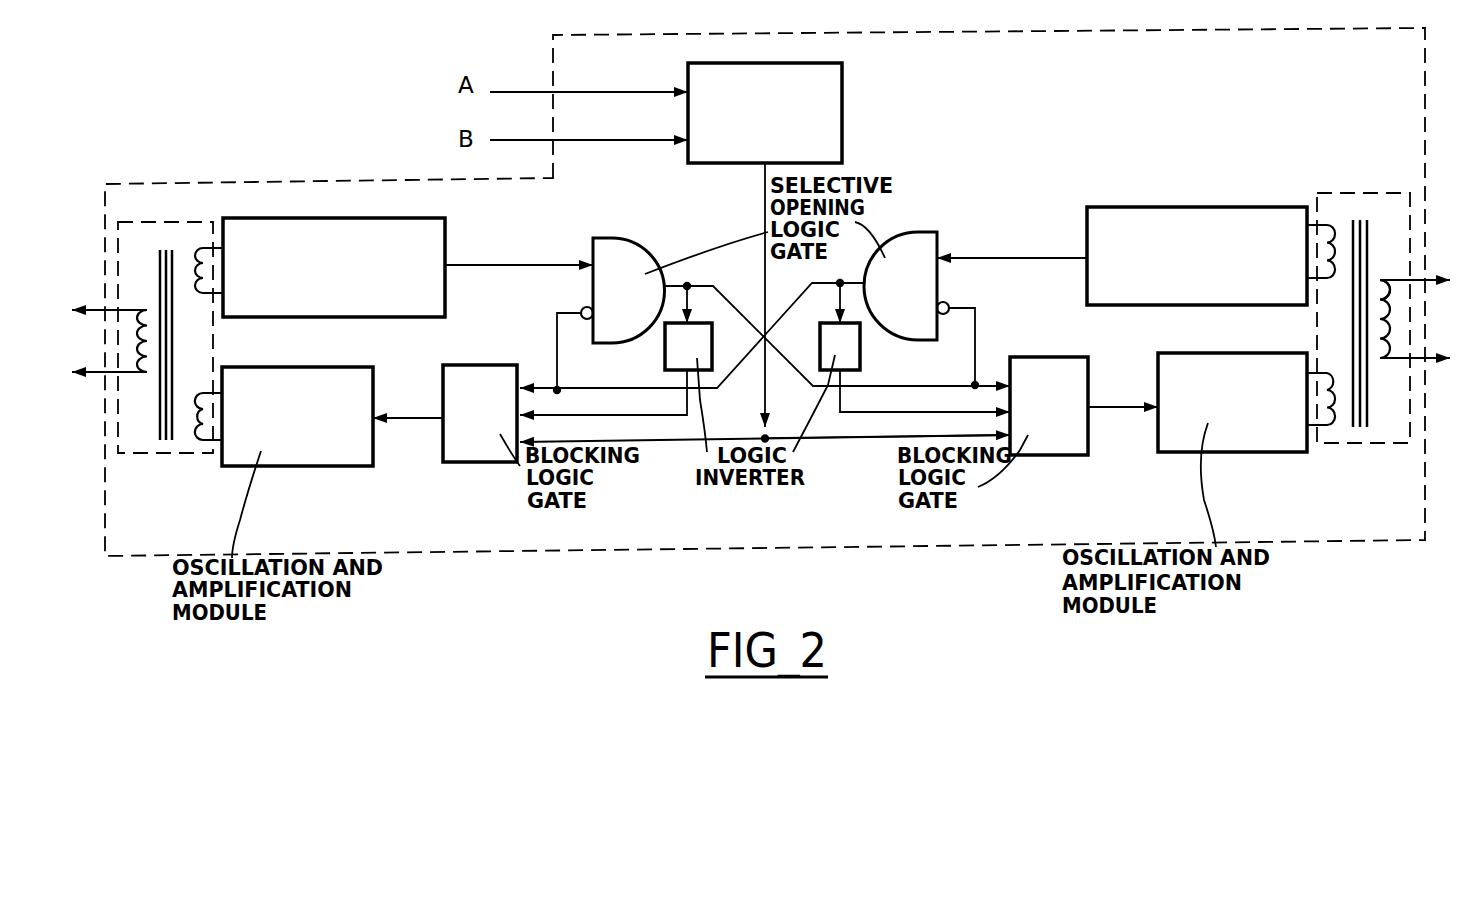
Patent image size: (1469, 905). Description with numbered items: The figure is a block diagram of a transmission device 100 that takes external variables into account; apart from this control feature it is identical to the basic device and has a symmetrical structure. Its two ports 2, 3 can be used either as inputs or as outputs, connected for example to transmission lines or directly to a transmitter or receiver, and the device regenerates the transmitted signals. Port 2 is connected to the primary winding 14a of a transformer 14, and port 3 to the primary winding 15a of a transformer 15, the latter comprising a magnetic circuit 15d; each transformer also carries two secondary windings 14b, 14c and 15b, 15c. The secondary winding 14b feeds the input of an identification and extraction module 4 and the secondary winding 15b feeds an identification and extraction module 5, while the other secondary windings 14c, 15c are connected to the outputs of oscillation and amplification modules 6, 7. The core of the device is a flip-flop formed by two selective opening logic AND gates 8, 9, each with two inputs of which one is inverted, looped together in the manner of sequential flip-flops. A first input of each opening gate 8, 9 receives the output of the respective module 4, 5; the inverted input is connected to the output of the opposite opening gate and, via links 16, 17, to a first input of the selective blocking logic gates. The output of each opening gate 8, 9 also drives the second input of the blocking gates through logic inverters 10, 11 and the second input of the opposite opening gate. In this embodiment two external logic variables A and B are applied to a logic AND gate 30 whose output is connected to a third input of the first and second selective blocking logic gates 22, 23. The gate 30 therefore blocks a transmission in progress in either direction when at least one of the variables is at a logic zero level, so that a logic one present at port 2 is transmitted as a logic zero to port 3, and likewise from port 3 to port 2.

The port 2 is at (74, 347).
The port 3 is at (1448, 305).
The identification and extraction module 4 is at (343, 218).
The identification and extraction module 5 is at (1198, 207).
The oscillation and amplification module 6 is at (298, 466).
The oscillation and amplification module 7 is at (1223, 452).
The selective opening logic AND gate 8 is at (627, 238).
The selective opening logic AND gate 9 is at (905, 232).
The logic inverter 10 is at (665, 348).
The logic inverter 11 is at (860, 350).
The transformer 14 is at (177, 359).
The primary winding 14a is at (130, 310).
The secondary winding 14b is at (190, 248).
The secondary winding 14c is at (194, 440).
The transformer 15 is at (1360, 340).
The primary winding 15a is at (1387, 360).
The secondary winding 15b is at (1330, 225).
The secondary winding 15c is at (1334, 425).
The magnetic circuit 15d is at (1370, 258).
The link 16 is at (731, 377).
The link 17 is at (797, 374).
The first selective blocking logic gate 22 is at (478, 462).
The second selective blocking logic gate 23 is at (1040, 457).
The logic AND gate 30 is at (842, 112).
The device 100 is at (1285, 547).